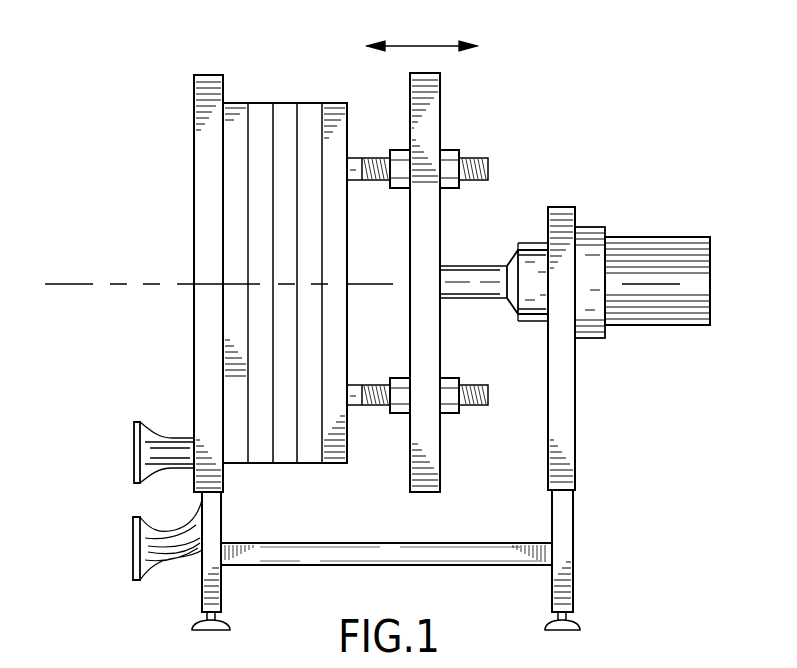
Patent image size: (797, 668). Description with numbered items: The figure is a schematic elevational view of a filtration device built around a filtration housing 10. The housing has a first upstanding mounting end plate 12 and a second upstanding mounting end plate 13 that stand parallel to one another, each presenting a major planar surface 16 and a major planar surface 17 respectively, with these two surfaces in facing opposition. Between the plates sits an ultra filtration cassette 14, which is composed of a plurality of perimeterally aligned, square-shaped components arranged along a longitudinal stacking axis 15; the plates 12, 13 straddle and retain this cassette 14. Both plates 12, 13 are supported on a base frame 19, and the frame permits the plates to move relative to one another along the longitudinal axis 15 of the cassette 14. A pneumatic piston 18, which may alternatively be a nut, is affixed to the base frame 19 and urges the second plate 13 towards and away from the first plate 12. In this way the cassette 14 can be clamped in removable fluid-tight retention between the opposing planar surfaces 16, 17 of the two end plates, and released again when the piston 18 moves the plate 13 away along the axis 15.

The filtration housing 10 is at (570, 163).
The first upstanding mounting end plate 12 is at (208, 75).
The second upstanding mounting end plate 13 is at (425, 73).
The ultra filtration cassette 14 is at (282, 103).
The longitudinal stacking axis 15 is at (71, 284).
The major planar surface 16 is at (228, 90).
The major planar surface 17 is at (408, 128).
The pneumatic piston 18 is at (657, 237).
The base frame 19 is at (573, 540).